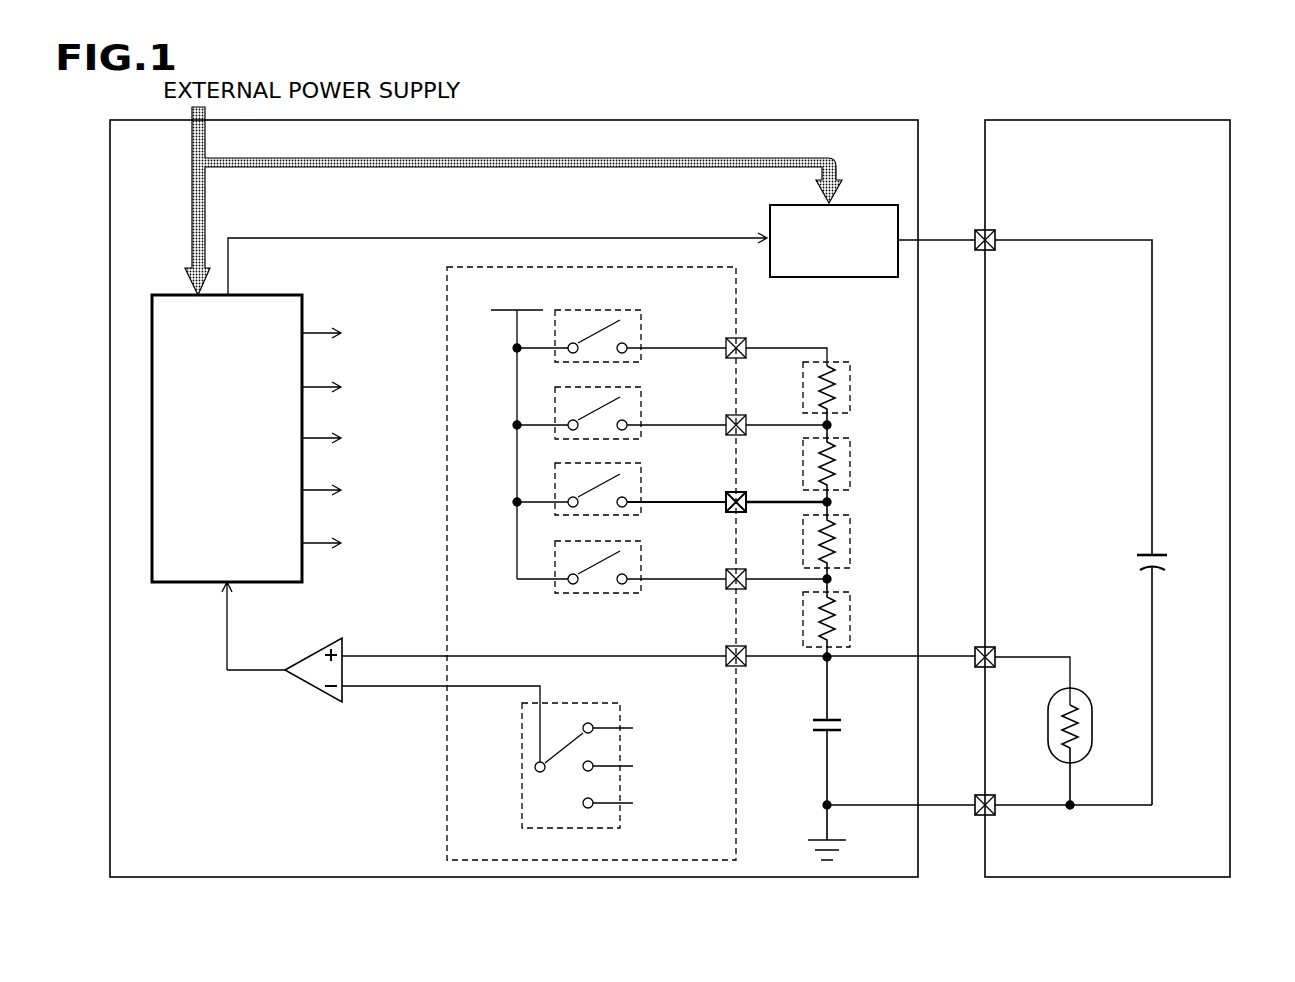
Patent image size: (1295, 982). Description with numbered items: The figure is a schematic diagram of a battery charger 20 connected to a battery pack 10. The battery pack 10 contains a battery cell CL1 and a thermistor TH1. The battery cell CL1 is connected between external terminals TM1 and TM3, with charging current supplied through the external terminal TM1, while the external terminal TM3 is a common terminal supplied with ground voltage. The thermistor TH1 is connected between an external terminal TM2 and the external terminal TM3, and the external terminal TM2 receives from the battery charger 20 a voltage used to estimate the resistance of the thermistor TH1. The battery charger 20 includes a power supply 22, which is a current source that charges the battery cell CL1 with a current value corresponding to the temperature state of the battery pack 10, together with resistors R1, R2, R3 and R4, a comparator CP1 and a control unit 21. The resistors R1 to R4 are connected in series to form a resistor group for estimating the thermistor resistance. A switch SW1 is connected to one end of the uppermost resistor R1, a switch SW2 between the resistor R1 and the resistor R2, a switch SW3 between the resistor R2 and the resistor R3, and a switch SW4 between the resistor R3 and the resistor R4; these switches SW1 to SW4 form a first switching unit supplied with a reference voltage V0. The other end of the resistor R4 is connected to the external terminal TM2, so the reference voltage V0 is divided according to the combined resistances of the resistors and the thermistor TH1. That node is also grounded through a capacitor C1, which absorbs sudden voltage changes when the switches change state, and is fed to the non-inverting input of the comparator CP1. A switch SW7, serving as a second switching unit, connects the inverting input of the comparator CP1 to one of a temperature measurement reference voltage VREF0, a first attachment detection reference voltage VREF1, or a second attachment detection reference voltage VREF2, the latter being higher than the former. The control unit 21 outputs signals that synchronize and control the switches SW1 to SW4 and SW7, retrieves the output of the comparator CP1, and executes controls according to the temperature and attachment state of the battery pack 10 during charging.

The battery pack 10 is at (1230, 170).
The battery charger 20 is at (918, 170).
The control unit 21 is at (290, 293).
The power supply 22 is at (855, 205).
The switch SW1 is at (641, 322).
The switch SW2 is at (641, 399).
The switch SW3 is at (641, 476).
The switch SW4 is at (641, 553).
The switch SW7 is at (522, 815).
The resistor R1 is at (850, 372).
The resistor R2 is at (850, 449).
The resistor R3 is at (850, 528).
The resistor R4 is at (850, 605).
The capacitor C1 is at (840, 716).
The comparator CP1 is at (312, 653).
The reference voltage V0 is at (517, 432).
The temperature measurement reference voltage VREF0 is at (677, 728).
The first attachment detection reference voltage VREF1 is at (677, 766).
The second attachment detection reference voltage VREF2 is at (677, 803).
The external terminal TM1 is at (995, 232).
The external terminal TM2 is at (995, 649).
The external terminal TM3 is at (995, 797).
The thermistor TH1 is at (1107, 699).
The battery cell CL1 is at (1181, 541).